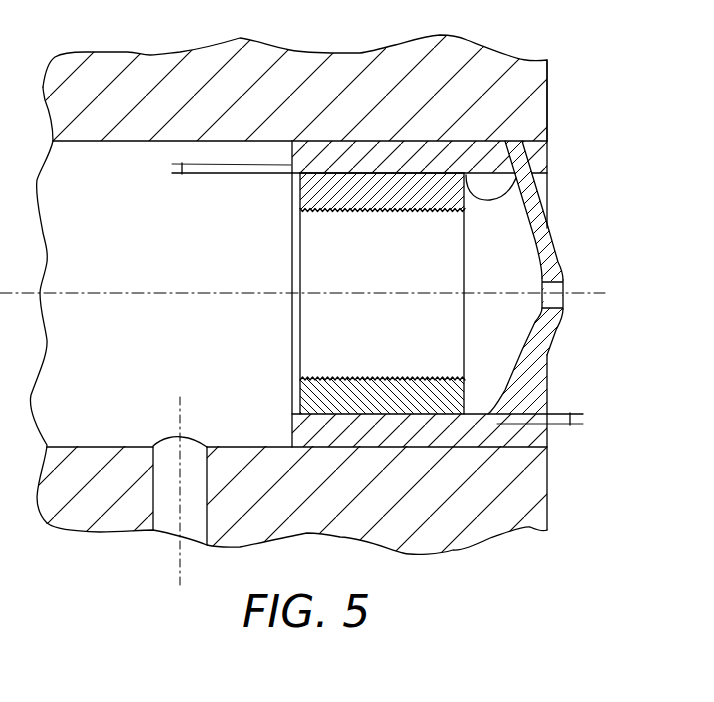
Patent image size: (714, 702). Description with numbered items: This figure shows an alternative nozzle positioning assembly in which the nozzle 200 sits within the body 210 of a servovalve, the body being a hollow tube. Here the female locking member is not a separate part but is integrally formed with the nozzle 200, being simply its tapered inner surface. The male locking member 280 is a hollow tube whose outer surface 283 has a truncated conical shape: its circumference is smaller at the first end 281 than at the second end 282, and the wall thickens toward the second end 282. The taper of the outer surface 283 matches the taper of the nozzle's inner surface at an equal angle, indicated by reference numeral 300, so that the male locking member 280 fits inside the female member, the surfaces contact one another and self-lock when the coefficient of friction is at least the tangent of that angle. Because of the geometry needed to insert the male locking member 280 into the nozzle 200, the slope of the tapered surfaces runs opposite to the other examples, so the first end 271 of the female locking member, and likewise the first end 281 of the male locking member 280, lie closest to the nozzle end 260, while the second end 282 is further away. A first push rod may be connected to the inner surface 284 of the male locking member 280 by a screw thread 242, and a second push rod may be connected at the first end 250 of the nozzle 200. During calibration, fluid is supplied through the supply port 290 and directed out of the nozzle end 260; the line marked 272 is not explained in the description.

The nozzle 200 is at (480, 141).
The body of the servovalve 210 is at (197, 56).
The screw thread 242 is at (392, 378).
The first end of the hollow nozzle 250 is at (312, 141).
The nozzle end 260 is at (558, 250).
The first end of the female locking member 271 is at (532, 141).
The plate inner face 272 is at (292, 153).
The male locking member 280 is at (412, 195).
The first end of the male locking member 281 is at (526, 178).
The second end of the male locking member 282 is at (292, 192).
The outer surface of the male locking member 283 is at (362, 173).
The inner surface of the male locking member 284 is at (330, 212).
The supply port 290 is at (165, 525).
The angle of the taper 300 is at (172, 164).